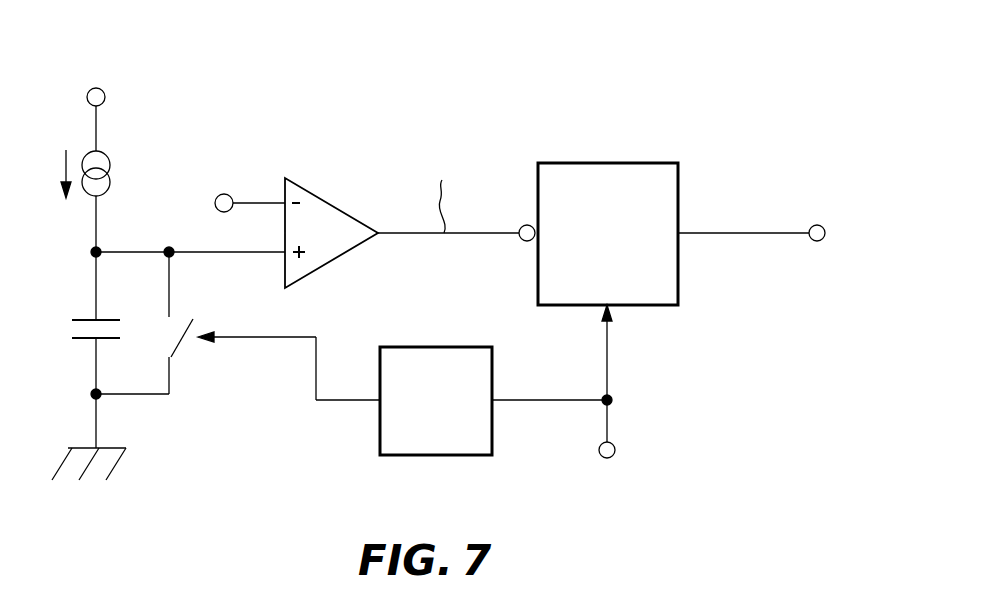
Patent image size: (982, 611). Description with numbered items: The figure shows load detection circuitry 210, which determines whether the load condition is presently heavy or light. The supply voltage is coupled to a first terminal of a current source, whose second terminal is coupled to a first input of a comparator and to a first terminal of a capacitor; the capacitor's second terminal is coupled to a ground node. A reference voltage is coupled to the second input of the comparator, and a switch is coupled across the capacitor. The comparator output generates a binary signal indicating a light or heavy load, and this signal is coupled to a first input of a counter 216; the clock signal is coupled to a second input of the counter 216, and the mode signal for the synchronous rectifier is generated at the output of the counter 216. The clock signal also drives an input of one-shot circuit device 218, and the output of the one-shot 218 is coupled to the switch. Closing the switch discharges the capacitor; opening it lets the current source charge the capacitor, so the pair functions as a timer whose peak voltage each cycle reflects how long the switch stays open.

The load detection circuitry 210 is at (800, 119).
The counter 216 is at (590, 266).
The one-shot circuit device 218 is at (419, 444).